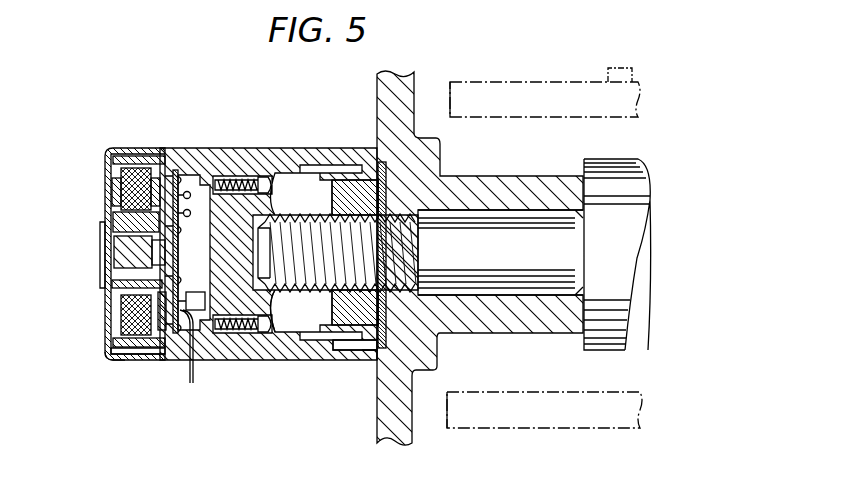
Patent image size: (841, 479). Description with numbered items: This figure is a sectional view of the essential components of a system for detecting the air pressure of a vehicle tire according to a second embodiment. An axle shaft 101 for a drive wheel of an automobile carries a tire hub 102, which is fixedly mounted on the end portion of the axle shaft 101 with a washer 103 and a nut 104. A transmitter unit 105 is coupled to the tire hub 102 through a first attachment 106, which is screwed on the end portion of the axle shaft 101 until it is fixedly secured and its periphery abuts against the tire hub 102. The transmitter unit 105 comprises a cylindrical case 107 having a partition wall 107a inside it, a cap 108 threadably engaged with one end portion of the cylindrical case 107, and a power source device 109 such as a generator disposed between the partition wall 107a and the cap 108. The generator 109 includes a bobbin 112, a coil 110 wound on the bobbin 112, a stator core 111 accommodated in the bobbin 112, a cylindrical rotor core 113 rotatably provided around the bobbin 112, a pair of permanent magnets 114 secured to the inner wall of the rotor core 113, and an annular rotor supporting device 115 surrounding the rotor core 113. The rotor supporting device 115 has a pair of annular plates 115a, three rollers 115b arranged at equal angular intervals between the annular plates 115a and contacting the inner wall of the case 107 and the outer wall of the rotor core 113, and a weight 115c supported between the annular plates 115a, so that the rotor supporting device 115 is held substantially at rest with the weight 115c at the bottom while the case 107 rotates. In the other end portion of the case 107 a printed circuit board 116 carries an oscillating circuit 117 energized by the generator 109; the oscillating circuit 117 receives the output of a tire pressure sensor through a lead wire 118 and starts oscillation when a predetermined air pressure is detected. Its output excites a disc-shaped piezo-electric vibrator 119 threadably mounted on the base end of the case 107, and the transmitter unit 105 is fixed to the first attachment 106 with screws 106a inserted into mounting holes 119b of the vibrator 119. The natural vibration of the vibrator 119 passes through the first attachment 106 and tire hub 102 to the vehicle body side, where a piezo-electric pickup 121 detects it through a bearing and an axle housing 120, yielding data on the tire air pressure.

The axle shaft 101 is at (626, 159).
The tire hub 102 is at (377, 96).
The washer 103 is at (372, 357).
The nut 104 is at (350, 350).
The transmitter unit 105 is at (163, 150).
The first attachment 106 is at (252, 360).
The screws 106a is at (300, 345).
The cylindrical case 107 is at (176, 335).
The partition wall 107a is at (110, 356).
The cap 108 is at (118, 356).
The power source device 109 is at (108, 168).
The coil 110 is at (114, 254).
The stator core 111 is at (152, 255).
The bobbin 112 is at (113, 224).
The rotor core 113 is at (158, 305).
The permanent magnets 114 is at (112, 200).
The rotor supporting device 115 is at (121, 330).
The annular plates 115a is at (170, 160).
The rollers 115b is at (138, 155).
The weight 115c is at (140, 348).
The printed circuit board 116 is at (380, 170).
The oscillating circuit 117 is at (335, 200).
The lead wire 118 is at (192, 384).
The piezo-electric vibrator 119 is at (237, 175).
The mounting holes 119b is at (258, 334).
The axle housing 120 is at (592, 82).
The piezo-electric pickup 121 is at (620, 68).